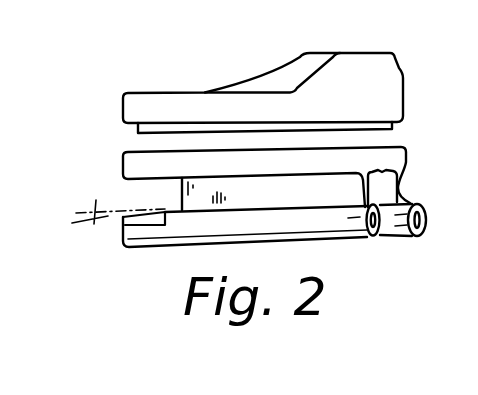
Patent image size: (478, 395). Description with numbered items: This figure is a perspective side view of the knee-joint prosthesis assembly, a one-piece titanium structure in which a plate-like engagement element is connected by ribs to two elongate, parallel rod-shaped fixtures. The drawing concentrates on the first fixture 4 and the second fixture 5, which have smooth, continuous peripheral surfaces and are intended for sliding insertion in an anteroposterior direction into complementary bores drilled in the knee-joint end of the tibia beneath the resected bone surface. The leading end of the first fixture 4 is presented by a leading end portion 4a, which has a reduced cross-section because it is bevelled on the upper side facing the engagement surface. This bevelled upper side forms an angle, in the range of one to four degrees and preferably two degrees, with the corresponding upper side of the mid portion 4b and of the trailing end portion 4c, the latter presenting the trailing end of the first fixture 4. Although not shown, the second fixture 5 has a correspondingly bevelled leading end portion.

The first fixture 4 is at (331, 222).
The leading end portion 4a is at (125, 242).
The mid portion 4b is at (242, 226).
The trailing end portion 4c is at (378, 240).
The second fixture 5 is at (418, 240).